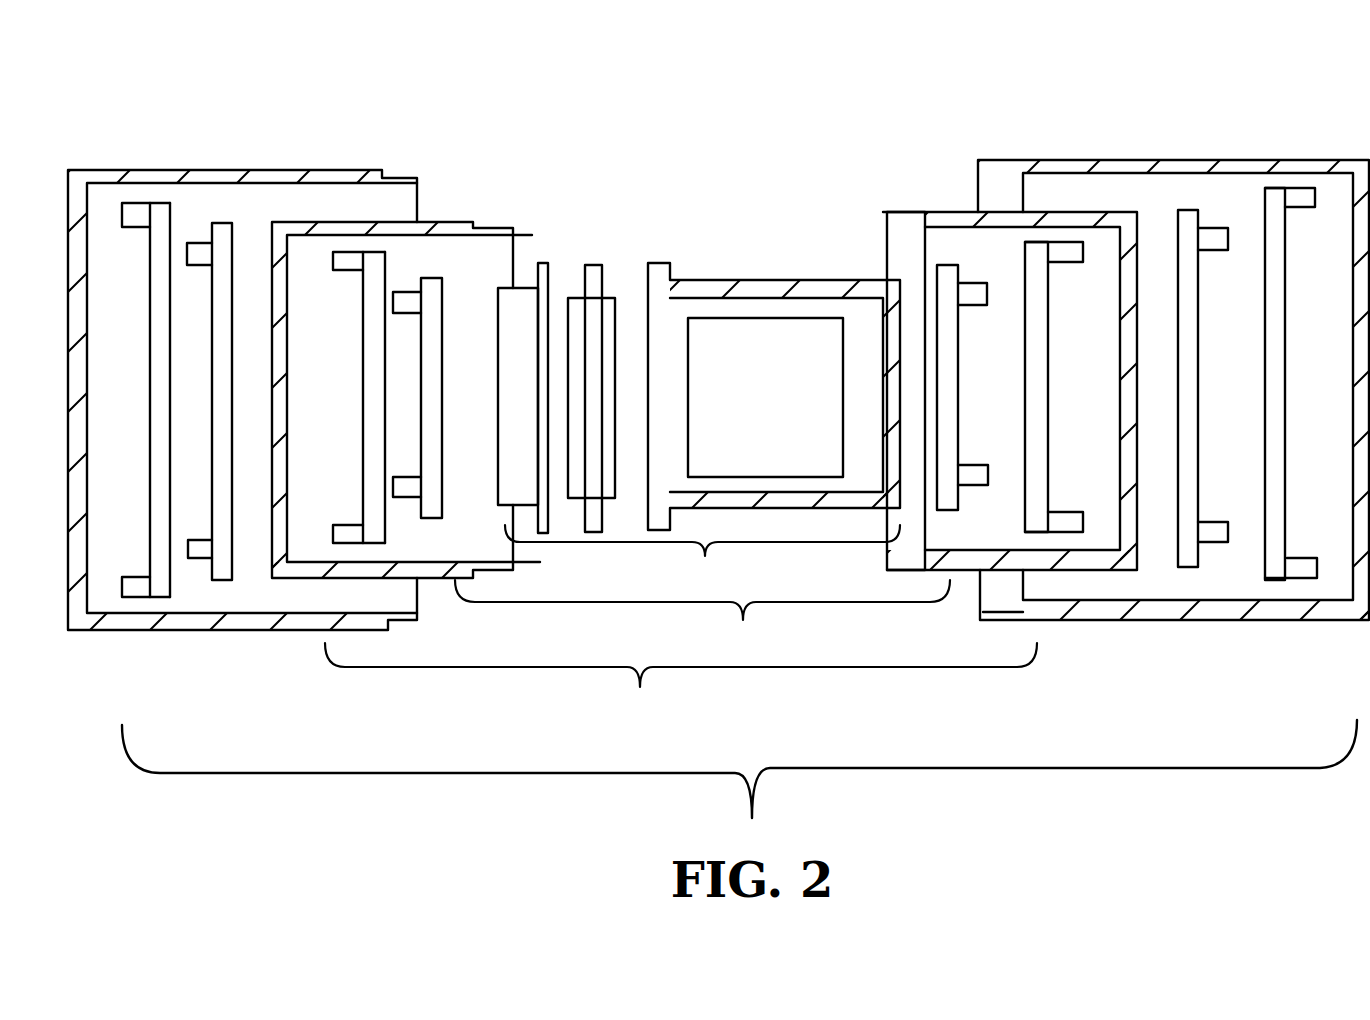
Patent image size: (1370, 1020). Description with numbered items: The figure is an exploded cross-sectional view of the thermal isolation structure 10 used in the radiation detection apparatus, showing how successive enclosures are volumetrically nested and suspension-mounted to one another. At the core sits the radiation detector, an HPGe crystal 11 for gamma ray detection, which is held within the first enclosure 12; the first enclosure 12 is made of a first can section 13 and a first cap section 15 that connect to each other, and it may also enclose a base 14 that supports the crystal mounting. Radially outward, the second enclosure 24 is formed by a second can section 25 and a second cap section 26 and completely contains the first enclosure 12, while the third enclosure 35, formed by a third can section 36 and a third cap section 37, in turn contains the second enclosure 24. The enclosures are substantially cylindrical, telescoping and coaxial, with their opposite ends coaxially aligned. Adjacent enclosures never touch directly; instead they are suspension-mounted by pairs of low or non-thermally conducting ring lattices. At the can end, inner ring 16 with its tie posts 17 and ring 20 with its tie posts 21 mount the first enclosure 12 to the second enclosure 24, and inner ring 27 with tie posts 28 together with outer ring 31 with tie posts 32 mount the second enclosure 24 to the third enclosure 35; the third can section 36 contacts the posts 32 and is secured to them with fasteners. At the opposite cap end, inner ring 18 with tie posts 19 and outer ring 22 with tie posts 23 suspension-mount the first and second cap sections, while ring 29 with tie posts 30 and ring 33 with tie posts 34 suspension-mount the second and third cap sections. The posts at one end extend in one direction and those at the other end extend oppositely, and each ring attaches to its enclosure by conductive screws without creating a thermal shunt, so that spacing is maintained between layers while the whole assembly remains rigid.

The thermal isolation structure 10 is at (885, 84).
The HPGe crystal 11 is at (778, 390).
The first enclosure 12 is at (702, 558).
The first can section 13 is at (717, 280).
The base 14 is at (597, 264).
The first cap section 15 is at (520, 287).
The inner ring 16 is at (963, 392).
The tie posts 17 is at (973, 280).
The inner ring 18 is at (442, 398).
The tie posts 19 is at (405, 292).
The inner ring 20 is at (1053, 402).
The tie posts 21 is at (1073, 262).
The outer ring 22 is at (362, 392).
The tie posts 23 is at (350, 272).
The second enclosure 24 is at (702, 619).
The second can section 25 is at (942, 212).
The second cap section 26 is at (453, 222).
The inner ring 27 is at (1198, 418).
The tie posts 28 is at (1205, 253).
The inner ring 29 is at (213, 432).
The tie posts 30 is at (210, 263).
The outer ring 31 is at (1285, 370).
The tie posts 32 is at (1300, 207).
The outer ring 33 is at (150, 434).
The tie posts 34 is at (140, 228).
The third enclosure 35 is at (681, 685).
The third can section 36 is at (1167, 158).
The third cap section 37 is at (213, 170).